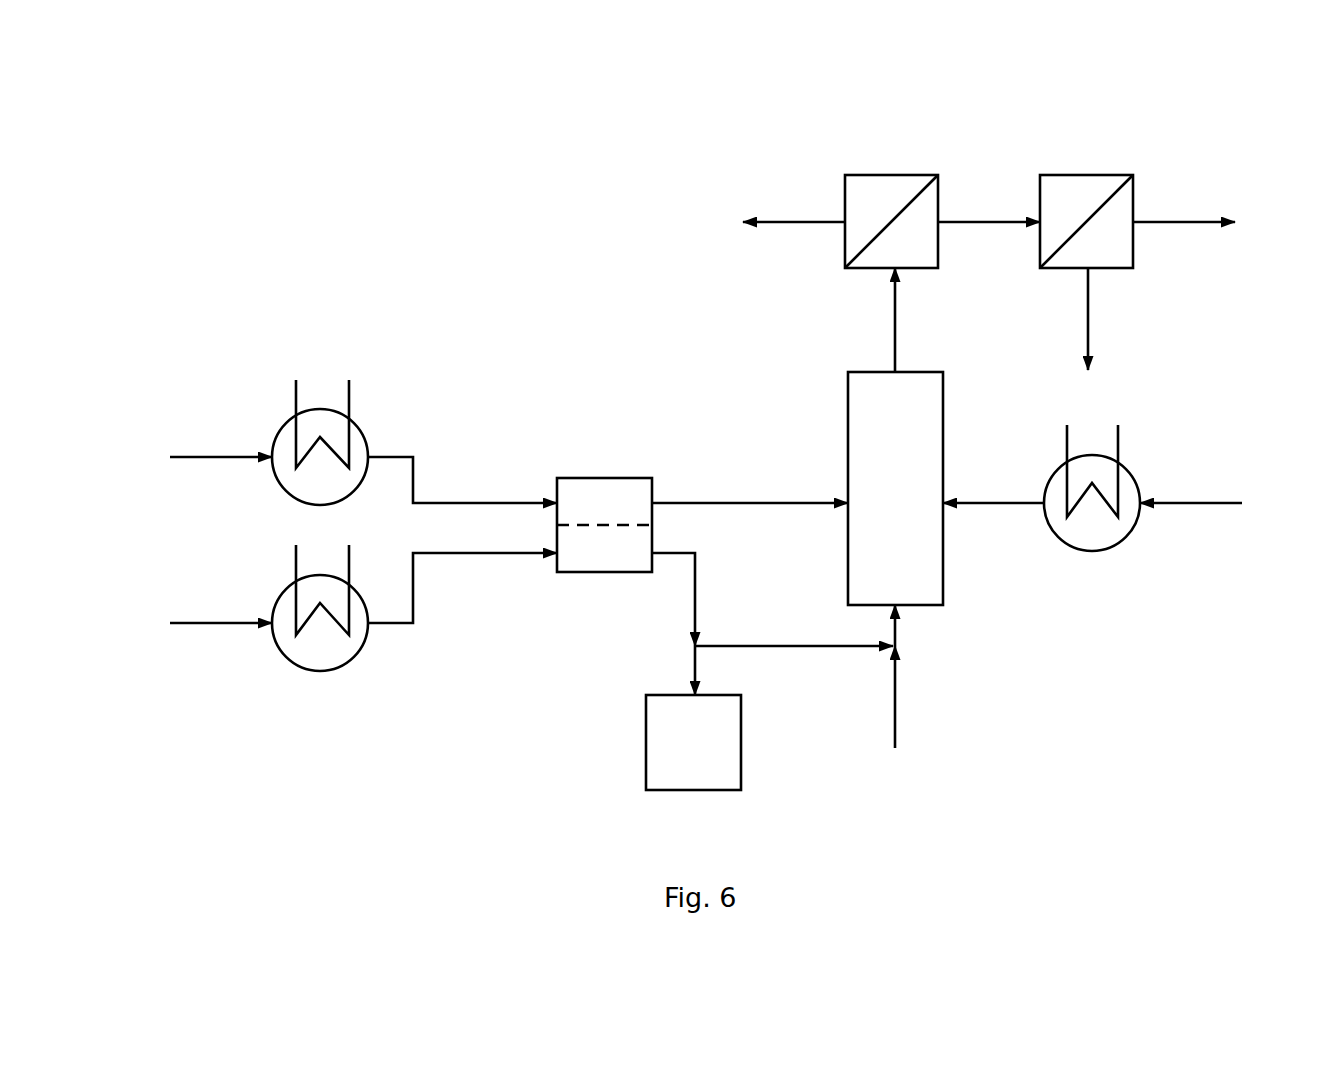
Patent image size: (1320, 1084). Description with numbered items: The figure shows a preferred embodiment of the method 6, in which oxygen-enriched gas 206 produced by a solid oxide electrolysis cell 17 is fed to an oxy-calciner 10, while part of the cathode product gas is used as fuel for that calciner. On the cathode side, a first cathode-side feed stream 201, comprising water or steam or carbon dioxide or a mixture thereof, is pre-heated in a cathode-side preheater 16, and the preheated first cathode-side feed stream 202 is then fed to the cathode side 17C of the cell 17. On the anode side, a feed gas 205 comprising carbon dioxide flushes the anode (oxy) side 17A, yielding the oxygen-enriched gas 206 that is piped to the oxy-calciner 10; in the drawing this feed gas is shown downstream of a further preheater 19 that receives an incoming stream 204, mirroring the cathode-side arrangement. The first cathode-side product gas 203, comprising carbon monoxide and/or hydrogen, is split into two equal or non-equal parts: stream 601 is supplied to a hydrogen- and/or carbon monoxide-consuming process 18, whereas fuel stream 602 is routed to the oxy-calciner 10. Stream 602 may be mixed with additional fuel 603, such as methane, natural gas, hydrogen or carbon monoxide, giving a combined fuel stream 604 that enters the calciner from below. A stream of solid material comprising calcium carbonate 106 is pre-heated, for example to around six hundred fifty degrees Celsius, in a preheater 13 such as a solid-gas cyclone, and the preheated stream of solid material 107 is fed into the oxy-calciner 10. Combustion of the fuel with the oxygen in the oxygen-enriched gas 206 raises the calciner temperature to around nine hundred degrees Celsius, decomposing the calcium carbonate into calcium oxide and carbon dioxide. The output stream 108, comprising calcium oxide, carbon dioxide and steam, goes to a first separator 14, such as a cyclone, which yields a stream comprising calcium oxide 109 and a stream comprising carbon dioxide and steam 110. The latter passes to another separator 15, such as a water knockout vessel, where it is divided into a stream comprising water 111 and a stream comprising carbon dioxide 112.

The method 6 is at (403, 233).
The heat exchanger 19 is at (293, 418).
The feed stream 204 is at (230, 457).
The cathode-side preheater 16 is at (293, 583).
The first cathode-side feed stream 201 is at (230, 623).
The feed gas 205 is at (498, 500).
The preheated first cathode-side feed stream 202 is at (502, 555).
The solid oxide electrolysis cell 17 is at (558, 478).
The anode (oxy) side 17A is at (627, 498).
The cathode side 17C is at (577, 555).
The oxygen-enriched gas 206 is at (795, 498).
The first cathode-side product gas 203 is at (697, 608).
The stream 601 is at (693, 668).
The fuel stream 602 is at (787, 647).
The hydrogen- and/or carbon monoxide-consuming process 18 is at (645, 697).
The additional fuel 603 is at (895, 708).
The combined fuel stream 604 is at (895, 633).
The oxy-calciner 10 is at (848, 372).
The output stream 108 is at (897, 328).
The first separator 14 is at (845, 175).
The stream comprising calcium oxide 109 is at (805, 222).
The stream comprising carbon dioxide and steam 110 is at (993, 222).
The another separator 15 is at (1040, 175).
The stream comprising carbon dioxide 112 is at (1170, 222).
The stream comprising H2O 111 is at (1088, 322).
The preheater 13 is at (1118, 470).
The preheated stream of solid material 107 is at (992, 500).
The stream of solid material comprising calcium carbonate 106 is at (1192, 500).